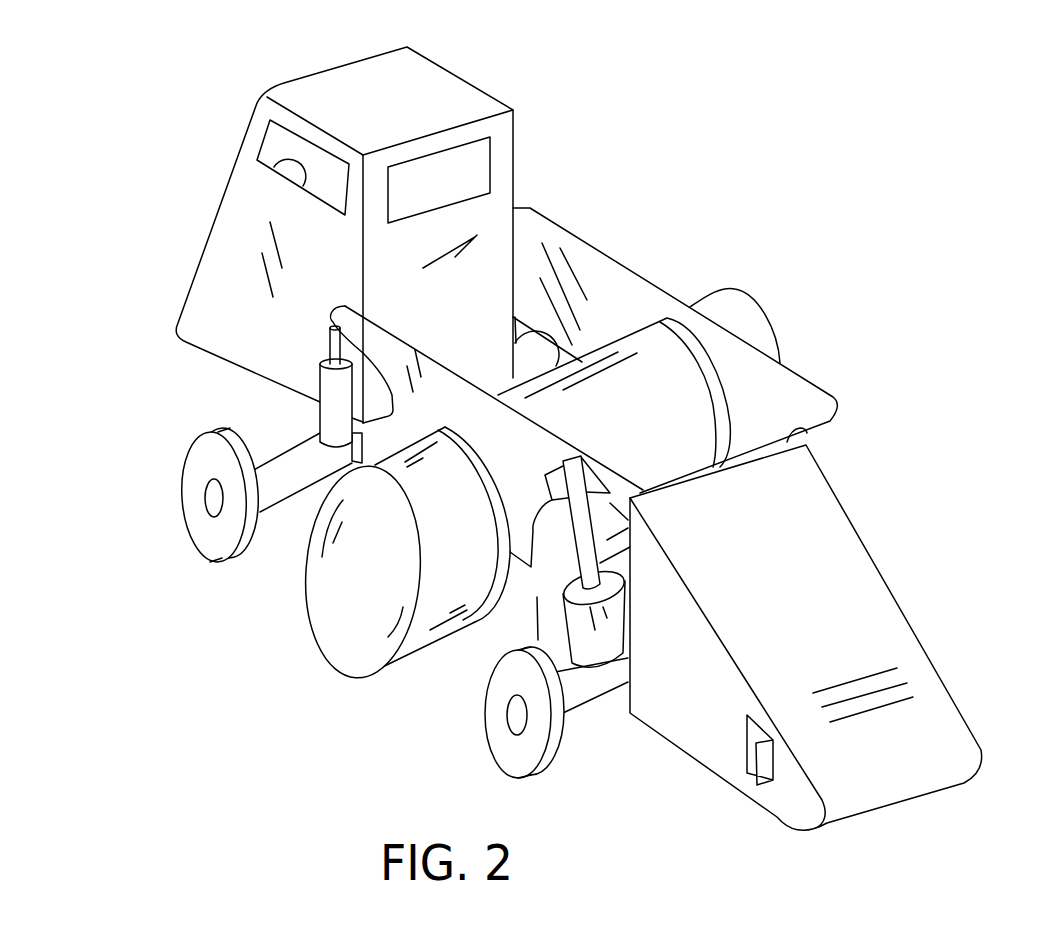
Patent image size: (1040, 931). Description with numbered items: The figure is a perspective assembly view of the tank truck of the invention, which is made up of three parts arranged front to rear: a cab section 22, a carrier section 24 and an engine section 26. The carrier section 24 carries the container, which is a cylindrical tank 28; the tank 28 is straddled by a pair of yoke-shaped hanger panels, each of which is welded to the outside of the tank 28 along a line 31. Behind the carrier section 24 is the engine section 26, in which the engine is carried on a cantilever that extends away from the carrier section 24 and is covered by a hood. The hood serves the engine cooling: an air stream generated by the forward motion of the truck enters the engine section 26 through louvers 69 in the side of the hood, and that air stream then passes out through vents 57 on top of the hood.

The cab section 22 is at (507, 92).
The carrier section 24 is at (785, 290).
The engine section 26 is at (825, 666).
The cylindrical tank 28 is at (757, 328).
The weld line 31 is at (492, 463).
The vents 57 is at (897, 653).
The louvers 69 is at (767, 778).